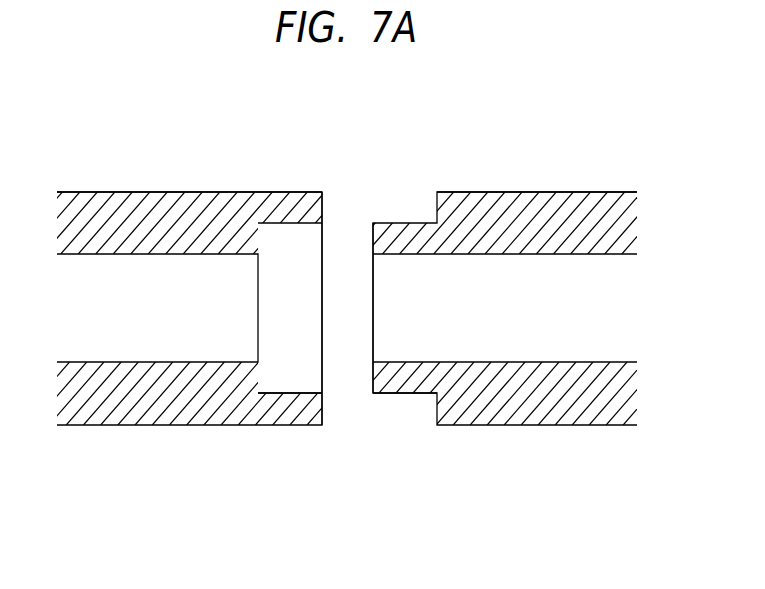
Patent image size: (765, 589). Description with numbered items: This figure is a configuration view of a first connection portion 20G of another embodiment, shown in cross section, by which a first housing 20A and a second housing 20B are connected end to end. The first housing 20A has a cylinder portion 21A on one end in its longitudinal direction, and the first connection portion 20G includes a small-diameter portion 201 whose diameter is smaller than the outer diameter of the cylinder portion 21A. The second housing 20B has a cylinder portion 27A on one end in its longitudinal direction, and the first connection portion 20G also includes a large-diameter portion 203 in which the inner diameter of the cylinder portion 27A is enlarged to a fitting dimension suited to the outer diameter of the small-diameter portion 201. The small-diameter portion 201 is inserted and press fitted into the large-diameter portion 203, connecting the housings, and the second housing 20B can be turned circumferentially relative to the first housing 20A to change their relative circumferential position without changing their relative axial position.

The first housing 20A is at (497, 287).
The second housing 20B is at (192, 288).
The cylinder portion 21A is at (616, 192).
The cylinder portion 27A is at (85, 192).
The small-diameter portion 201 is at (395, 393).
The large-diameter portion 203 is at (305, 393).
The first connection portion 20G is at (432, 515).